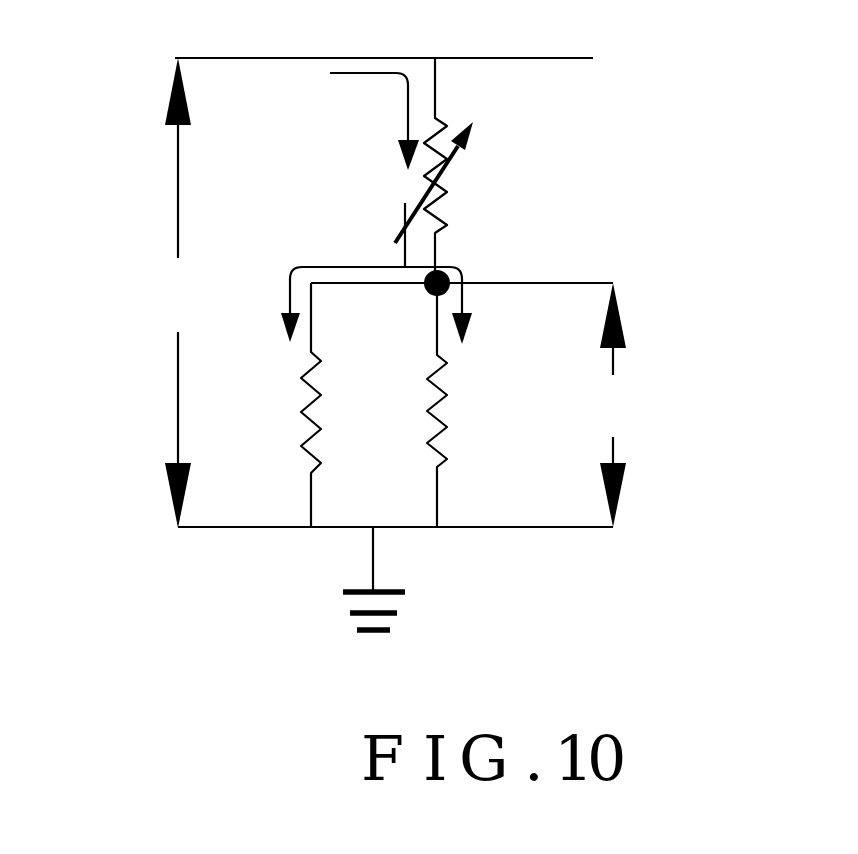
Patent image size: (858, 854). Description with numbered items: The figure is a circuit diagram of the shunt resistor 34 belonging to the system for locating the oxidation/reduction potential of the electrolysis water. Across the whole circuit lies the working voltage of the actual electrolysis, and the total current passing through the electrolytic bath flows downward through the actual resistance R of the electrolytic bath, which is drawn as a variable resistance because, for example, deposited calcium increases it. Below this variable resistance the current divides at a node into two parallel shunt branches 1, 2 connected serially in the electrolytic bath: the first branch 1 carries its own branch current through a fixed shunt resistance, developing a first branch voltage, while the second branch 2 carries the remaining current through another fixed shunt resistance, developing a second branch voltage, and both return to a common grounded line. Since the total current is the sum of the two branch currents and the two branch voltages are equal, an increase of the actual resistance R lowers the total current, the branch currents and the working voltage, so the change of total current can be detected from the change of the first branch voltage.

The shunt resistor 34 is at (489, 315).
The actual resistance of the electrolytic bath R is at (451, 170).
The first shunt branch 1 is at (481, 397).
The second shunt branch 2 is at (331, 397).